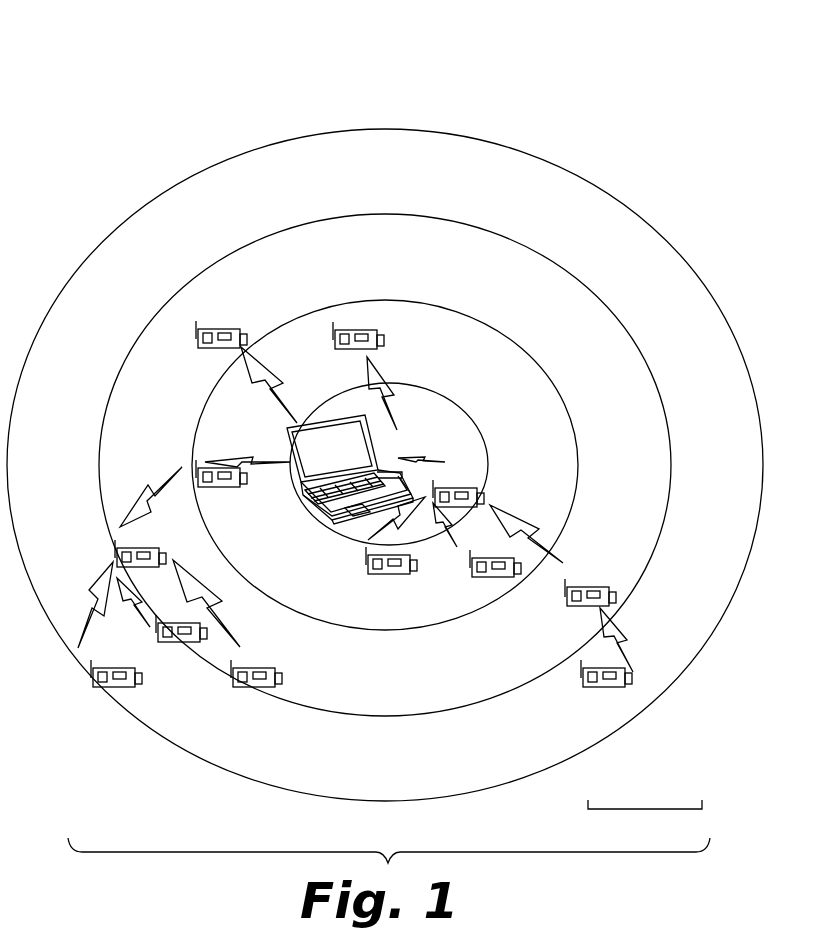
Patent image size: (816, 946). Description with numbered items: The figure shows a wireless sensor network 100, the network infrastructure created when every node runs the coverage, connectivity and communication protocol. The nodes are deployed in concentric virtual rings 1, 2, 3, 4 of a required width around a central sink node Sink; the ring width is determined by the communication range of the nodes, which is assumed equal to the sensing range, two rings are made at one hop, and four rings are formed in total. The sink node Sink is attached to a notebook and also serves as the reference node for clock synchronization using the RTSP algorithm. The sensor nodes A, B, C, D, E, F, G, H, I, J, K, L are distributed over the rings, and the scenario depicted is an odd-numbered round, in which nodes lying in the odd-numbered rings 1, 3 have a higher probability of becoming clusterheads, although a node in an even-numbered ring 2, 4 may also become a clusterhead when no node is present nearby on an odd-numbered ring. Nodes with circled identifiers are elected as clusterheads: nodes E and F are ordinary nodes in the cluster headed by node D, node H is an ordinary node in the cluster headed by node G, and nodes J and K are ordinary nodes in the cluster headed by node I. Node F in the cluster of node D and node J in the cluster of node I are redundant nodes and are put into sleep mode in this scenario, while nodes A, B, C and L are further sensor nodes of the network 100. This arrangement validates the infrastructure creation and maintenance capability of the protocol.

The wireless sensor network 100 is at (592, 92).
The first virtual ring 1 is at (389, 464).
The second virtual ring 2 is at (385, 465).
The third virtual ring 3 is at (385, 465).
The fourth virtual ring 4 is at (385, 465).
The sink node Sink is at (352, 469).
The sensor node A is at (221, 490).
The sensor node B is at (218, 350).
The sensor node C is at (358, 351).
The clusterhead node D is at (462, 510).
The ordinary node E is at (391, 576).
The redundant node F is at (490, 579).
The clusterhead node G is at (590, 608).
The ordinary node H is at (606, 690).
The clusterhead node I is at (143, 570).
The redundant node J is at (181, 645).
The ordinary node K is at (112, 693).
The sensor node L is at (256, 689).